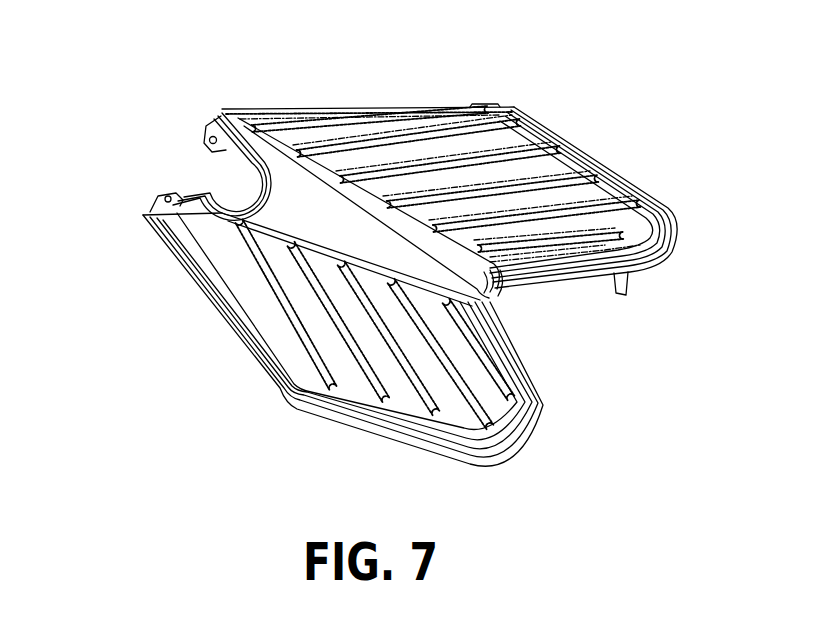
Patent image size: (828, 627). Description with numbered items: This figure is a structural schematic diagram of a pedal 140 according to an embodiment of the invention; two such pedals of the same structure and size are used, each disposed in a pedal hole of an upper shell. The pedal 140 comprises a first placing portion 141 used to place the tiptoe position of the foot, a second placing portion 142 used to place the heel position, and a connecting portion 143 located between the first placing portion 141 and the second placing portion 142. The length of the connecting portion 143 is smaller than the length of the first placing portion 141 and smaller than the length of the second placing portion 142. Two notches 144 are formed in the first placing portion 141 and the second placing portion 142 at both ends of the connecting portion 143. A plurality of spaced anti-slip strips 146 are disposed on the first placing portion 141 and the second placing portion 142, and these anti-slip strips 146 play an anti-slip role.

The pedal 140 is at (384, 102).
The first placing portion 141 is at (145, 214).
The second placing portion 142 is at (222, 114).
The connecting portion 143 is at (482, 293).
The notches 144 is at (220, 180).
The anti-slip strips 146 is at (543, 150).